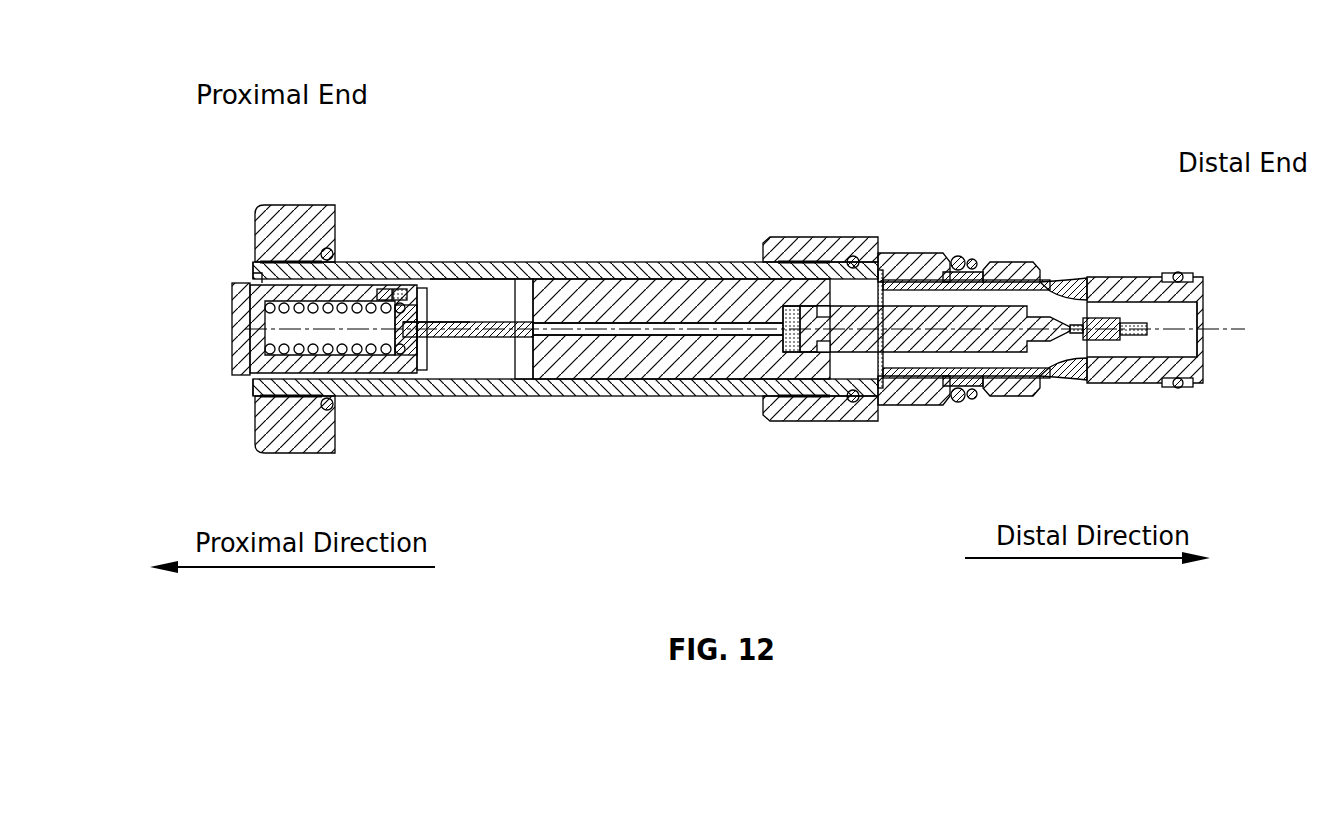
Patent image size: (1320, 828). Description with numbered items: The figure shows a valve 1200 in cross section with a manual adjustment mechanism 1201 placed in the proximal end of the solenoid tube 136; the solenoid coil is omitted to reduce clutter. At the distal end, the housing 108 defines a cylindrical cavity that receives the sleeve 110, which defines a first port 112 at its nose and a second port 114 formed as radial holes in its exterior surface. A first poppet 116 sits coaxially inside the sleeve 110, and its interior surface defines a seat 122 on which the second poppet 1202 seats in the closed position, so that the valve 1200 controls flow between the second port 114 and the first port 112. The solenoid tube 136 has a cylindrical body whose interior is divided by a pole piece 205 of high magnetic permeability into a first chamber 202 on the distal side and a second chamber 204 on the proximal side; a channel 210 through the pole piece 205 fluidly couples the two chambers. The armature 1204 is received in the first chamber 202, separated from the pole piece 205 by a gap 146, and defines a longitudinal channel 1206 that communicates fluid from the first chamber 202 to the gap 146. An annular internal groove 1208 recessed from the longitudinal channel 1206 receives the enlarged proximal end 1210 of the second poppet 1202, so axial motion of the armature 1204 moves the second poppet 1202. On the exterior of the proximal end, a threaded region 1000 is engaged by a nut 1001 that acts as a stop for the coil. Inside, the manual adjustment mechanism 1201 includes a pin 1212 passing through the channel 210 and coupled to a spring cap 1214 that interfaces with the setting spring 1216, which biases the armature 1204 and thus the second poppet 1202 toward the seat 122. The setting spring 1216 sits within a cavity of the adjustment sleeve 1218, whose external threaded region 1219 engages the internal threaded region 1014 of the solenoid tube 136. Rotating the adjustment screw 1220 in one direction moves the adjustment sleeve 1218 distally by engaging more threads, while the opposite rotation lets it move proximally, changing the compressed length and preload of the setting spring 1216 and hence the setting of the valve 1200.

The valve 1200 is at (208, 237).
The manual adjustment mechanism 1201 is at (241, 278).
The threaded region 1000 is at (292, 256).
The nut 1001 is at (313, 227).
The adjustment screw 1220 is at (242, 356).
The threaded region 1219 is at (300, 377).
The threaded region 1014 is at (320, 370).
The adjustment sleeve 1218 is at (377, 288).
The setting spring 1216 is at (389, 302).
The spring cap 1214 is at (404, 303).
The pin 1212 is at (460, 320).
The pole piece 205 is at (498, 286).
The solenoid tube 136 is at (571, 260).
The longitudinal channel 1206 is at (665, 327).
The housing 108 is at (805, 237).
The first chamber 202 is at (865, 300).
The second port 114 is at (1074, 279).
The sleeve 110 is at (1132, 290).
The first port 112 is at (1207, 345).
The first poppet 116 is at (1077, 342).
The seat 122 is at (1083, 343).
The second poppet 1202 is at (966, 402).
The enlarged proximal end 1210 is at (860, 352).
The annular internal groove 1208 is at (794, 352).
The armature 1204 is at (700, 360).
The gap 146 is at (526, 374).
The channel 210 is at (485, 340).
The second chamber 204 is at (420, 371).